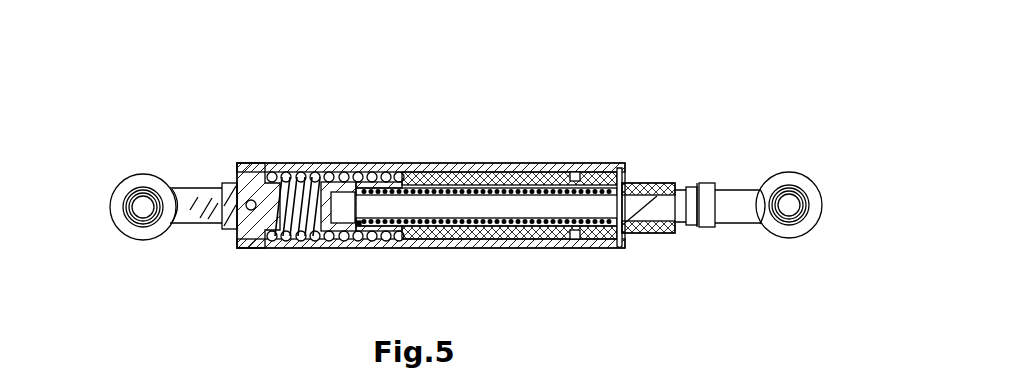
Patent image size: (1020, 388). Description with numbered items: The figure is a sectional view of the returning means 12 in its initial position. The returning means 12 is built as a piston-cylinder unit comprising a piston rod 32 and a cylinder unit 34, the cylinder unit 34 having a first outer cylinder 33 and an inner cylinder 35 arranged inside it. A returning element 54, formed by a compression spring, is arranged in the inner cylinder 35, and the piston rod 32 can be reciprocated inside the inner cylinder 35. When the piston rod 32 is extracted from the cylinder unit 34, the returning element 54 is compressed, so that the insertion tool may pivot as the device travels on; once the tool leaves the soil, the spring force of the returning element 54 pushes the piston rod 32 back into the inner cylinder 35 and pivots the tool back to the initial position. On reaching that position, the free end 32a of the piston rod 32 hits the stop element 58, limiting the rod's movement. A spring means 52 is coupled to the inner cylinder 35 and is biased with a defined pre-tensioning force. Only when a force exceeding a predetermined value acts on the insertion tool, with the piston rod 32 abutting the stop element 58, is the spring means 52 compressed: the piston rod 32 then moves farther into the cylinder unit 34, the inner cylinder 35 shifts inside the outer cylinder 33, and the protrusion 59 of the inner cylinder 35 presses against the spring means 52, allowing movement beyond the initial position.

The returning means 12 is at (488, 106).
The piston rod 32 is at (684, 190).
The free end of the piston rod 32a is at (363, 200).
The first outer cylinder 33 is at (533, 165).
The cylinder unit 34 is at (586, 156).
The inner cylinder 35 is at (455, 184).
The spring means 52 is at (307, 183).
The returning element 54 is at (620, 169).
The stop element 58 is at (343, 207).
The protrusion 59 is at (576, 238).